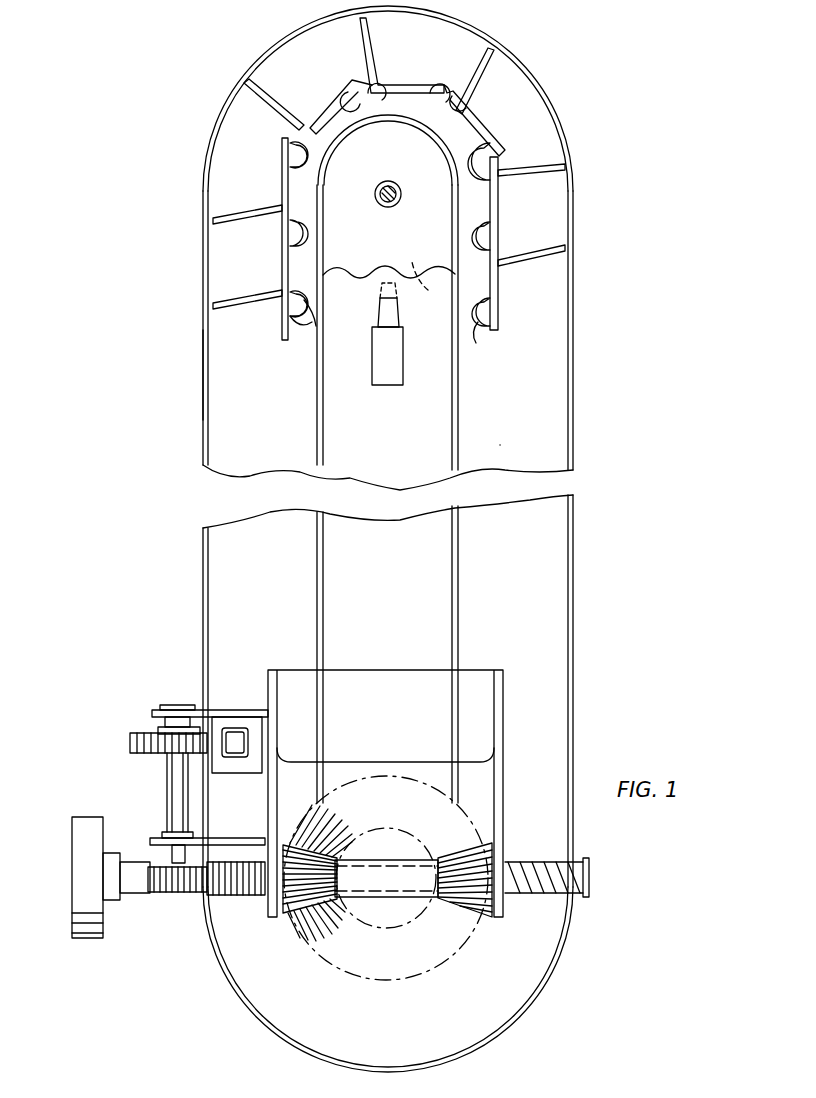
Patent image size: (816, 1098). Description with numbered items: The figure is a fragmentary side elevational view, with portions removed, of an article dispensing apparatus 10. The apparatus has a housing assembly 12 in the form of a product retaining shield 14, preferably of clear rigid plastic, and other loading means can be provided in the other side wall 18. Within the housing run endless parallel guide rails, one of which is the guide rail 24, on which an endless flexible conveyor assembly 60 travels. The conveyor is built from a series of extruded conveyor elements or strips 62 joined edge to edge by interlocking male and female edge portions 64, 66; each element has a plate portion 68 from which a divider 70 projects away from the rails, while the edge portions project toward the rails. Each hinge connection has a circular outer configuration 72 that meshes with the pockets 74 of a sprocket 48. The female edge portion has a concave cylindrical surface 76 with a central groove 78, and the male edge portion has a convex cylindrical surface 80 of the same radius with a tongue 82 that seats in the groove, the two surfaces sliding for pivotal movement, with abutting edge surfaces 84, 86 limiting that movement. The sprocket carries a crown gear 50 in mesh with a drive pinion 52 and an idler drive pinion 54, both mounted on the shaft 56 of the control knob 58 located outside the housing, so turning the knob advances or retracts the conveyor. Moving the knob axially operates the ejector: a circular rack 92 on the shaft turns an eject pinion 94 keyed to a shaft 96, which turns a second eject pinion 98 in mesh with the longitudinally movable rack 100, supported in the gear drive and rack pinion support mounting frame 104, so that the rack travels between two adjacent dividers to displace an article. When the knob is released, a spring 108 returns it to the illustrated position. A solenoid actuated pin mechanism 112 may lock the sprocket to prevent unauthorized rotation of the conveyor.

The article dispensing apparatus 10 is at (691, 66).
The housing assembly 12 is at (558, 87).
The product retaining shield 14 is at (203, 376).
The other side wall 18 is at (499, 431).
The guide rail 24 is at (317, 434).
The sprocket 48 is at (374, 1018).
The crown gear 50 is at (325, 826).
The drive pinion 52 is at (300, 922).
The idler drive pinion 54 is at (477, 915).
The shaft 56 is at (373, 892).
The control knob 58 is at (82, 940).
The endless flexible conveyor assembly 60 is at (428, 60).
The conveyor element 62 is at (326, 78).
The male edge portion 64 is at (288, 300).
The female edge portion 66 is at (307, 330).
The plate portion 68 is at (282, 272).
The divider 70 is at (213, 220).
The circular outer configuration 72 is at (318, 312).
The pocket 74 is at (370, 270).
The concave cylindrical surface 76 is at (480, 330).
The groove 78 is at (492, 302).
The convex cylindrical surface 80 is at (490, 258).
The tongue 82 is at (488, 230).
The abutting edge surface 84 is at (488, 150).
The abutting edge surface 86 is at (500, 166).
The circular rack 92 is at (220, 888).
The eject pinion 94 is at (176, 888).
The shaft 96 is at (172, 858).
The second eject pinion 98 is at (130, 742).
The rack 100 is at (236, 740).
The gear drive and rack pinion support mounting frame 104 is at (366, 682).
The spring 108 is at (536, 860).
The solenoid actuated pin mechanism 112 is at (378, 372).